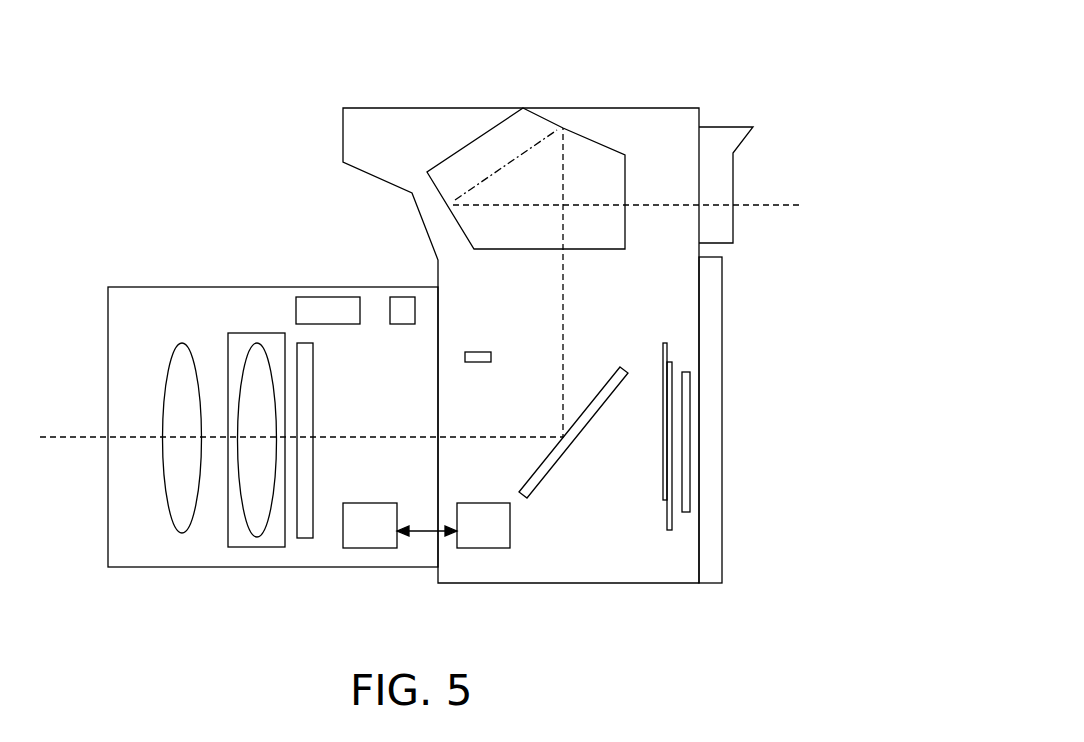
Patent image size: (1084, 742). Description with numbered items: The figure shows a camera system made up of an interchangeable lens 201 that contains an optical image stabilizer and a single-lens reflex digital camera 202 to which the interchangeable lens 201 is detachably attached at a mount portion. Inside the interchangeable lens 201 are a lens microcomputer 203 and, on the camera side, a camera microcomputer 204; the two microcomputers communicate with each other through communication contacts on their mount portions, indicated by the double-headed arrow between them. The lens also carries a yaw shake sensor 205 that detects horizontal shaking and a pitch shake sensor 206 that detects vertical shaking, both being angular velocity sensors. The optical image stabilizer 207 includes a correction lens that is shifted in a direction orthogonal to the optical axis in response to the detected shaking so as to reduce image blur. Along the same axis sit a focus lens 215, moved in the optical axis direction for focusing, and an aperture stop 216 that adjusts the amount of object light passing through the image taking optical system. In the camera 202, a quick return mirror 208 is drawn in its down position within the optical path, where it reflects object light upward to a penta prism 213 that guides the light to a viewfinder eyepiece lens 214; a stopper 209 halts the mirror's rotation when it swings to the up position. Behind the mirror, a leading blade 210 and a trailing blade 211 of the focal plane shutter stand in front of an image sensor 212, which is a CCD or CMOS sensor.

The interchangeable lens 201 is at (135, 550).
The single-lens reflex digital camera 202 is at (662, 120).
The lens microcomputer 203 is at (352, 540).
The camera microcomputer 204 is at (465, 540).
The yaw shake sensor 205 is at (322, 307).
The pitch shake sensor 206 is at (397, 305).
The optical image stabilizer 207 is at (238, 532).
The quick return mirror 208 is at (522, 497).
The stopper 209 is at (482, 353).
The leading blade 210 is at (657, 492).
The trailing blade 211 is at (670, 528).
The image sensor 212 is at (690, 493).
The penta prism 213 is at (613, 228).
The viewfinder eyepiece lens 214 is at (730, 138).
The focus lens 215 is at (180, 533).
The aperture stop 216 is at (305, 532).